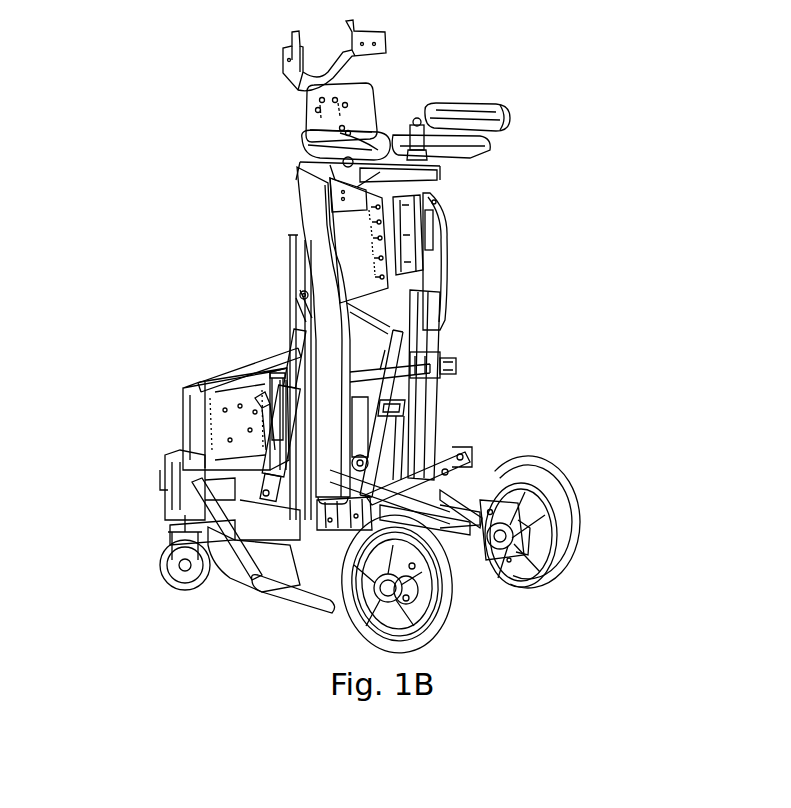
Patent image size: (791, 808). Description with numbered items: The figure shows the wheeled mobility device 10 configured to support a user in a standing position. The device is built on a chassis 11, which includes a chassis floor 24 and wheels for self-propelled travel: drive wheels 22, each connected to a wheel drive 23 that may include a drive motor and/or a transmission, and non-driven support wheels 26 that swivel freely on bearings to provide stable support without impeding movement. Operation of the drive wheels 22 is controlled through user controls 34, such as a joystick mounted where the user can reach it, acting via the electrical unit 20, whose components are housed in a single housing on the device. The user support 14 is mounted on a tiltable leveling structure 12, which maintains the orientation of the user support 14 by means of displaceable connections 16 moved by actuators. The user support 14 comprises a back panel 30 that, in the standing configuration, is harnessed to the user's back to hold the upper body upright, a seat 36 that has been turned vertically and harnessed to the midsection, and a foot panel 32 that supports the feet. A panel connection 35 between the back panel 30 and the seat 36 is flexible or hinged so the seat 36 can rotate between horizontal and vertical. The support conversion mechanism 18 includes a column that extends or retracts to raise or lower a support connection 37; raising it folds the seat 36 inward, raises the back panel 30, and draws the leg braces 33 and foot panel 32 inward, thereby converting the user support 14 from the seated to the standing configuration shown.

The wheeled mobility device 10 is at (228, 189).
The chassis 11 is at (227, 624).
The tiltable leveling structure 12 is at (288, 455).
The user support 14 is at (475, 245).
The displaceable connection 16 is at (192, 463).
The support conversion mechanism 18 is at (263, 395).
The electrical unit 20 is at (247, 367).
The drive wheel 22 is at (580, 527).
The wheel drive 23 is at (500, 543).
The chassis floor 24 is at (285, 568).
The support wheel 26 is at (162, 562).
The back panel 30 is at (360, 115).
The foot panel 32 is at (453, 528).
The leg brace 33 is at (456, 366).
The user controls 34 is at (426, 132).
The panel connection 35 is at (328, 190).
The seat 36 is at (368, 270).
The support connection 37 is at (300, 292).